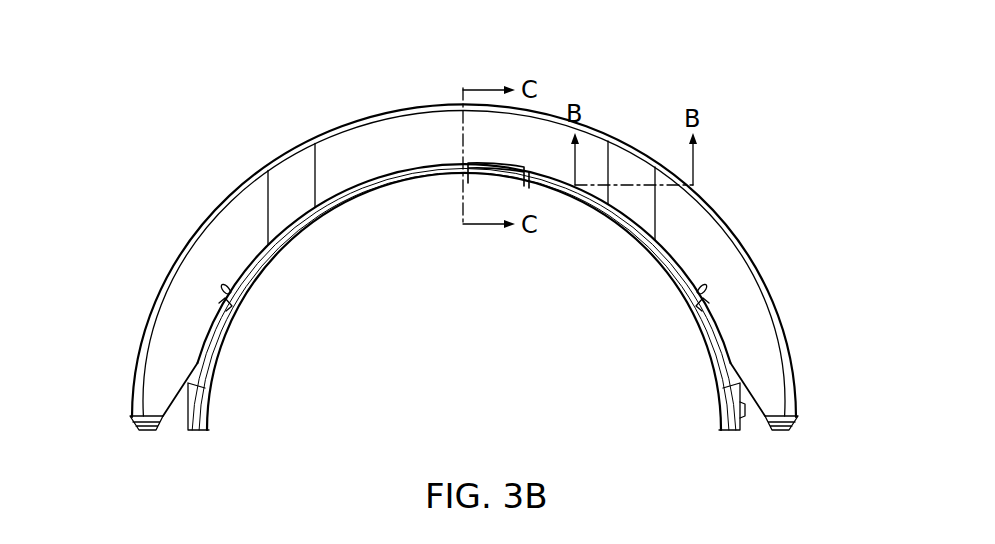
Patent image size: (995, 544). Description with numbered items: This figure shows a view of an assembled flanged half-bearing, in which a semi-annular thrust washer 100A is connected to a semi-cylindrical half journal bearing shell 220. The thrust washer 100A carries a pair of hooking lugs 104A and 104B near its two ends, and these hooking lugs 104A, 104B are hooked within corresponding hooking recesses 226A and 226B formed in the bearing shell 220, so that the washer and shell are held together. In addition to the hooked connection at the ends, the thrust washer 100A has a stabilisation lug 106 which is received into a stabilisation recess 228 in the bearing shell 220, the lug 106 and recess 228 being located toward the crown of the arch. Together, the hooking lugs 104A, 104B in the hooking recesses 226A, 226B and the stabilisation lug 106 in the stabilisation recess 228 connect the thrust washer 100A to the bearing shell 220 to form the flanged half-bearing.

The semi-annular thrust washer 100A is at (770, 180).
The hooking lug 104A is at (220, 316).
The hooking lug 104B is at (706, 322).
The stabilisation lug 106 is at (505, 168).
The semi-cylindrical half journal bearing shell 220 is at (741, 454).
The hooking recess 226A is at (208, 363).
The hooking recess 226B is at (718, 358).
The stabilisation recess 228 is at (480, 191).